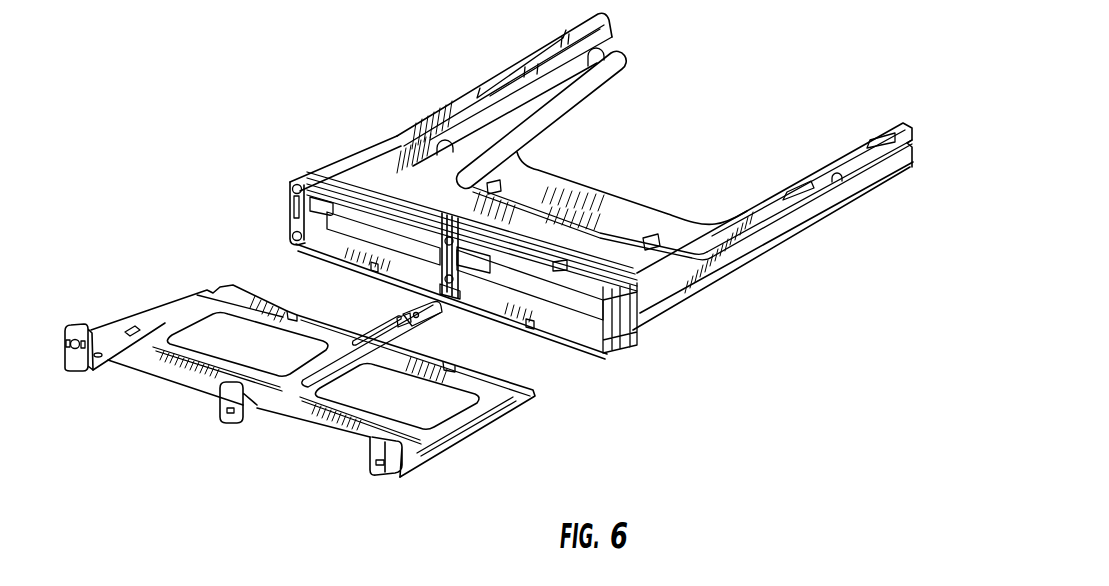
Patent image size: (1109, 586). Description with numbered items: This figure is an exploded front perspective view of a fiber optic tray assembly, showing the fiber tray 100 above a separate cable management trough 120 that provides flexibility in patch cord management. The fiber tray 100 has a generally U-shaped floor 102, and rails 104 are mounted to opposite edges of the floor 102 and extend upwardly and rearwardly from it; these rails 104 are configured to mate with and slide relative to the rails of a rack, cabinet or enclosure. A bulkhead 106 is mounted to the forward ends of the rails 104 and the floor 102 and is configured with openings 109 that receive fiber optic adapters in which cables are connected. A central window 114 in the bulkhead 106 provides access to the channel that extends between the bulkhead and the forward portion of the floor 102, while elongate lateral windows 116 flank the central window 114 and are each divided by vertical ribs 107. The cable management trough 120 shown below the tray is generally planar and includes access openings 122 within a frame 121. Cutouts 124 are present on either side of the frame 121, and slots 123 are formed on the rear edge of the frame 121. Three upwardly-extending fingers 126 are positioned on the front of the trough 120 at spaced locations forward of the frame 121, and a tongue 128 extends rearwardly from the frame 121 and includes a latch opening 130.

The fiber tray 100 is at (757, 294).
The floor 102 is at (606, 208).
The rails 104 is at (608, 36).
The bulkhead 106 is at (306, 173).
The vertical ribs 107 is at (372, 268).
The openings 109 is at (352, 229).
The central window 114 is at (456, 300).
The lateral windows 116 is at (345, 255).
The cable management trough 120 is at (443, 478).
The frame 121 is at (293, 383).
The access openings 122 is at (240, 350).
The slots 123 is at (291, 311).
The cutouts 124 is at (210, 289).
The fingers 126 is at (230, 403).
The tongue 128 is at (413, 312).
The latch opening 130 is at (328, 345).